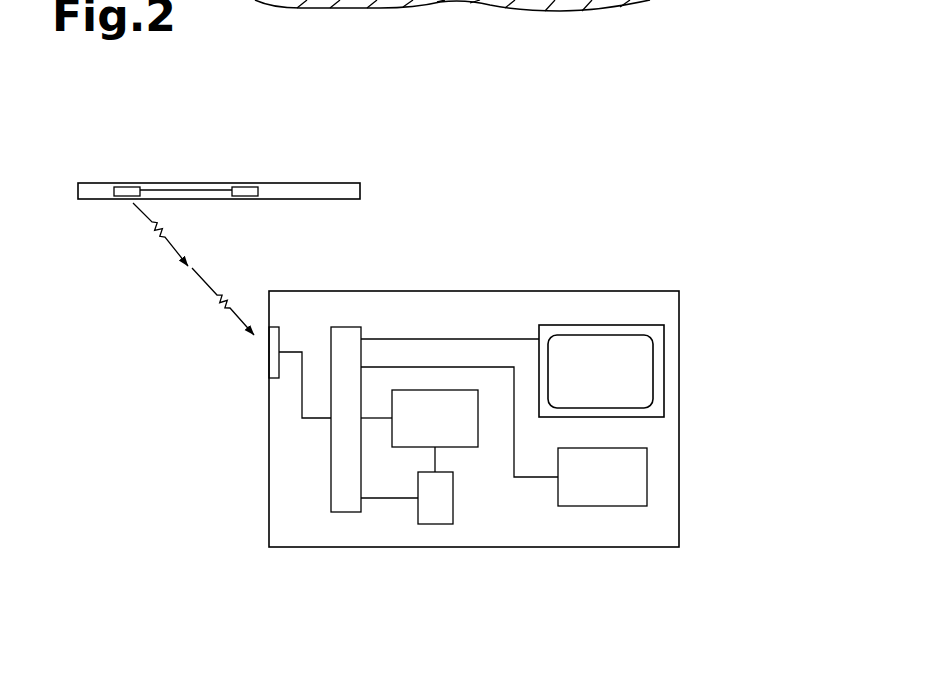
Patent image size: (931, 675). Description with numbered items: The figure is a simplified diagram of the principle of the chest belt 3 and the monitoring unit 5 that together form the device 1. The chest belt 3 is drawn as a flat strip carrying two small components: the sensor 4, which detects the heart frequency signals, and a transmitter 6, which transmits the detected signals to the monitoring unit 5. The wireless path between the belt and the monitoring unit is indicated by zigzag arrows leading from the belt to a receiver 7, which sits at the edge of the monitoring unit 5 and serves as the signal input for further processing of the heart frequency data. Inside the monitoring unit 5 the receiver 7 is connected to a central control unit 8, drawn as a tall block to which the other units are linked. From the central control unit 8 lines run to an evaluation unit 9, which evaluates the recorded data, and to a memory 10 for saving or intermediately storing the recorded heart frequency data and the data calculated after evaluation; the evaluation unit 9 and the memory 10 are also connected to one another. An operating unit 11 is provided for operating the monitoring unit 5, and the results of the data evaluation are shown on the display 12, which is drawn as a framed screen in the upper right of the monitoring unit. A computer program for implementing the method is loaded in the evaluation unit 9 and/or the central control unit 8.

The device 1 is at (638, 180).
The chest belt 3 is at (77, 183).
The sensor 4 is at (249, 178).
The monitoring unit 5 is at (703, 407).
The transmitter 6 is at (118, 203).
The receiver 7 is at (260, 370).
The central control unit 8 is at (323, 477).
The evaluation unit 9 is at (418, 388).
The memory 10 is at (463, 527).
The operating unit 11 is at (604, 512).
The display 12 is at (631, 423).